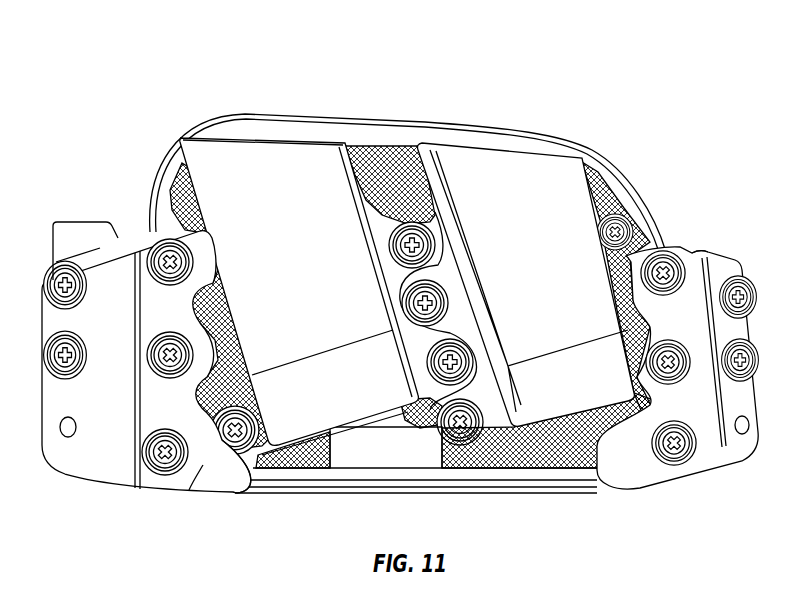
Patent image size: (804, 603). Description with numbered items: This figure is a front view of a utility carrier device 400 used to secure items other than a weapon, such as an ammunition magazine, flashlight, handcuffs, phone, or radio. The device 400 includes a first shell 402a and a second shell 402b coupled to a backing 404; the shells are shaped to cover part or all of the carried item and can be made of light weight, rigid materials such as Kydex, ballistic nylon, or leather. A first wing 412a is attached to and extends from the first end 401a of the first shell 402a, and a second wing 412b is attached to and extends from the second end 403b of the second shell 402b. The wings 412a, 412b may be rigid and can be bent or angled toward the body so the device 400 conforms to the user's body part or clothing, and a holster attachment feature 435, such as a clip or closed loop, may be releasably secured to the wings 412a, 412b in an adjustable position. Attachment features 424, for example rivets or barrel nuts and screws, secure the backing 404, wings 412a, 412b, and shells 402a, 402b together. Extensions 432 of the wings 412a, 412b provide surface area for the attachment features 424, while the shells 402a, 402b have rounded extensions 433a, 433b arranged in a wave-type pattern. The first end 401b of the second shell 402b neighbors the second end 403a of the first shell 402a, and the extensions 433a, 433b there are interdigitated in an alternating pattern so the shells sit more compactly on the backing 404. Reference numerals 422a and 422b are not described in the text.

The utility carrier device 400 is at (96, 95).
The first end of first shell 401a is at (180, 152).
The first end of second shell 401b is at (424, 160).
The first shell 402a is at (272, 168).
The second shell 402b is at (500, 170).
The second end of first shell 403a is at (352, 175).
The second end of second shell 403b is at (570, 180).
The backing 404 is at (580, 480).
The first wing 412a is at (53, 222).
The second wing 412b is at (707, 252).
The first clamp 422a is at (147, 233).
The second clamp 422b is at (672, 368).
The attachment feature 424 is at (162, 458).
The extension of wing 432 is at (207, 463).
The extension of first shell 433a is at (278, 446).
The extension of second shell 433b is at (500, 453).
The holster attachment feature 435 is at (90, 258).